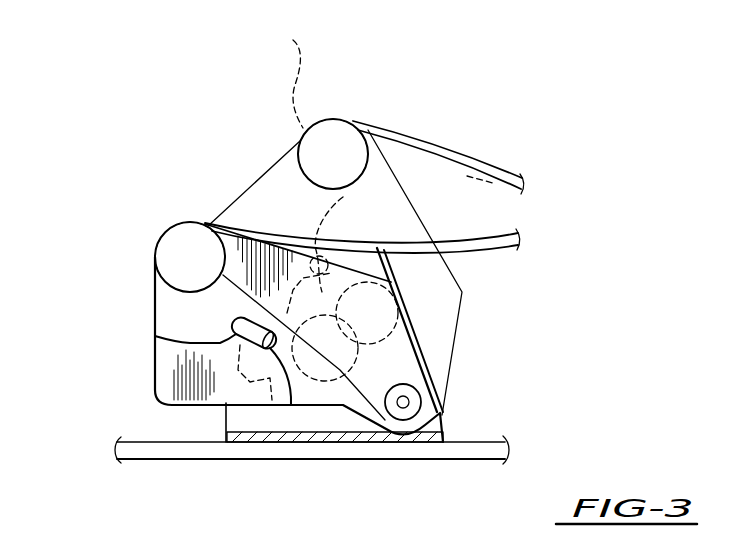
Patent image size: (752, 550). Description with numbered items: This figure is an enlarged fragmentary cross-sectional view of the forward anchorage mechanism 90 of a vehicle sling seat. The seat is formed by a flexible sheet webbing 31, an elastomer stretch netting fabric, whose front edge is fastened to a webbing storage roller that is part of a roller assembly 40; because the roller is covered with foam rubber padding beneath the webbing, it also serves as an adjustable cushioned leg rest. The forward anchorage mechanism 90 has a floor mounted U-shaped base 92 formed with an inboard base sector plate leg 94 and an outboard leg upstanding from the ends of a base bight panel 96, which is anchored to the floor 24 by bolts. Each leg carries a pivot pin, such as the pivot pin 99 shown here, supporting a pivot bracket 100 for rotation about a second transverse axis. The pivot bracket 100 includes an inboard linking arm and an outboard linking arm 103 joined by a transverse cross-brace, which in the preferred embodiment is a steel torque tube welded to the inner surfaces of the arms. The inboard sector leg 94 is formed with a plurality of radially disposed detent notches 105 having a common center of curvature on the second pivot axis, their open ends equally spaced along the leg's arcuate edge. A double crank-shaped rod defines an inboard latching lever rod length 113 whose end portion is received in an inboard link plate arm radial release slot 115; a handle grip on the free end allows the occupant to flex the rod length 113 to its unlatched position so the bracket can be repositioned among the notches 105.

The floor 24 is at (218, 442).
The webbing 31 is at (434, 146).
The roller assembly 40 is at (187, 220).
The forward anchorage mechanism 90 is at (147, 366).
The U-shaped base 92 is at (444, 428).
The inboard base sector plate leg 94 is at (226, 413).
The base bight panel 96 is at (430, 437).
The pivot pin 99 is at (403, 402).
The pivot bracket 100 is at (153, 280).
The outboard linking arm 103 is at (103, 440).
The detent notches 105 is at (351, 240).
The inboard latching lever rod length 113 is at (290, 406).
The inboard link plate arm radial release slot 115 is at (155, 336).